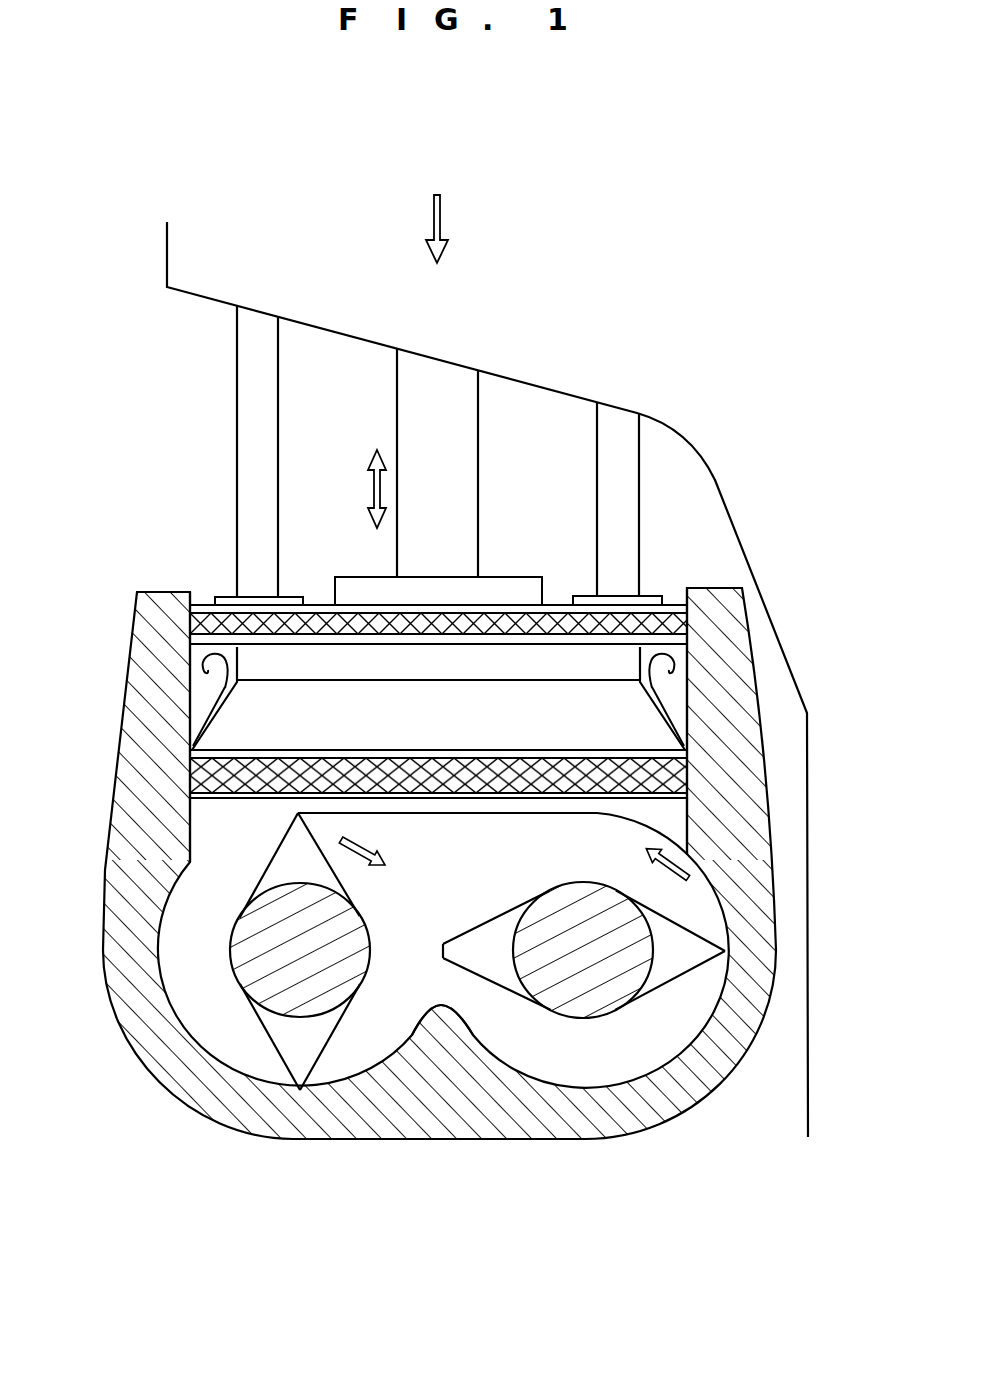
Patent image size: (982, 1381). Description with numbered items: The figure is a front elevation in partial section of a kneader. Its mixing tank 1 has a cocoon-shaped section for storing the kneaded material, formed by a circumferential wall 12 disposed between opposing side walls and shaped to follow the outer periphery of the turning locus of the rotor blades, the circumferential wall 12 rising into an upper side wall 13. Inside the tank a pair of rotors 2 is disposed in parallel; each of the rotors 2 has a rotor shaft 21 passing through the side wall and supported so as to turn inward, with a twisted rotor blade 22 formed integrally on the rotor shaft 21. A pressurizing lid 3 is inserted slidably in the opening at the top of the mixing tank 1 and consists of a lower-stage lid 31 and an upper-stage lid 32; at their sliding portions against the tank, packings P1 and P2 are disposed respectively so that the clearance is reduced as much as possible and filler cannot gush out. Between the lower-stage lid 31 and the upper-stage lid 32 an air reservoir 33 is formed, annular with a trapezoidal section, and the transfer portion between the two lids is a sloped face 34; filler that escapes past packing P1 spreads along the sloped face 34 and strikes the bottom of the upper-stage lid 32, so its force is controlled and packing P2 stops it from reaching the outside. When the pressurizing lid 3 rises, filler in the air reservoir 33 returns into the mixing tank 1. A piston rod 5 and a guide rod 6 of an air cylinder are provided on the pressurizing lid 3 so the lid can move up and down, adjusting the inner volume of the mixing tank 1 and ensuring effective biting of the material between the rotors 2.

The mixing tank 1 is at (513, 1032).
The rotors 2 is at (436, 1036).
The pressurizing lid 3 is at (223, 582).
The piston rod 5 is at (462, 432).
The guide rod 6 is at (267, 415).
The circumferential wall 12 is at (395, 1043).
The upper side wall 13 is at (200, 836).
The rotor shafts 21 is at (262, 975).
The rotor blade 22 is at (683, 952).
The lower-stage lid 31 is at (443, 805).
The upper-stage lid 32 is at (317, 597).
The air reservoir 33 is at (210, 690).
The sloped face 34 is at (608, 725).
The packing P1 is at (527, 788).
The packing P2 is at (558, 624).